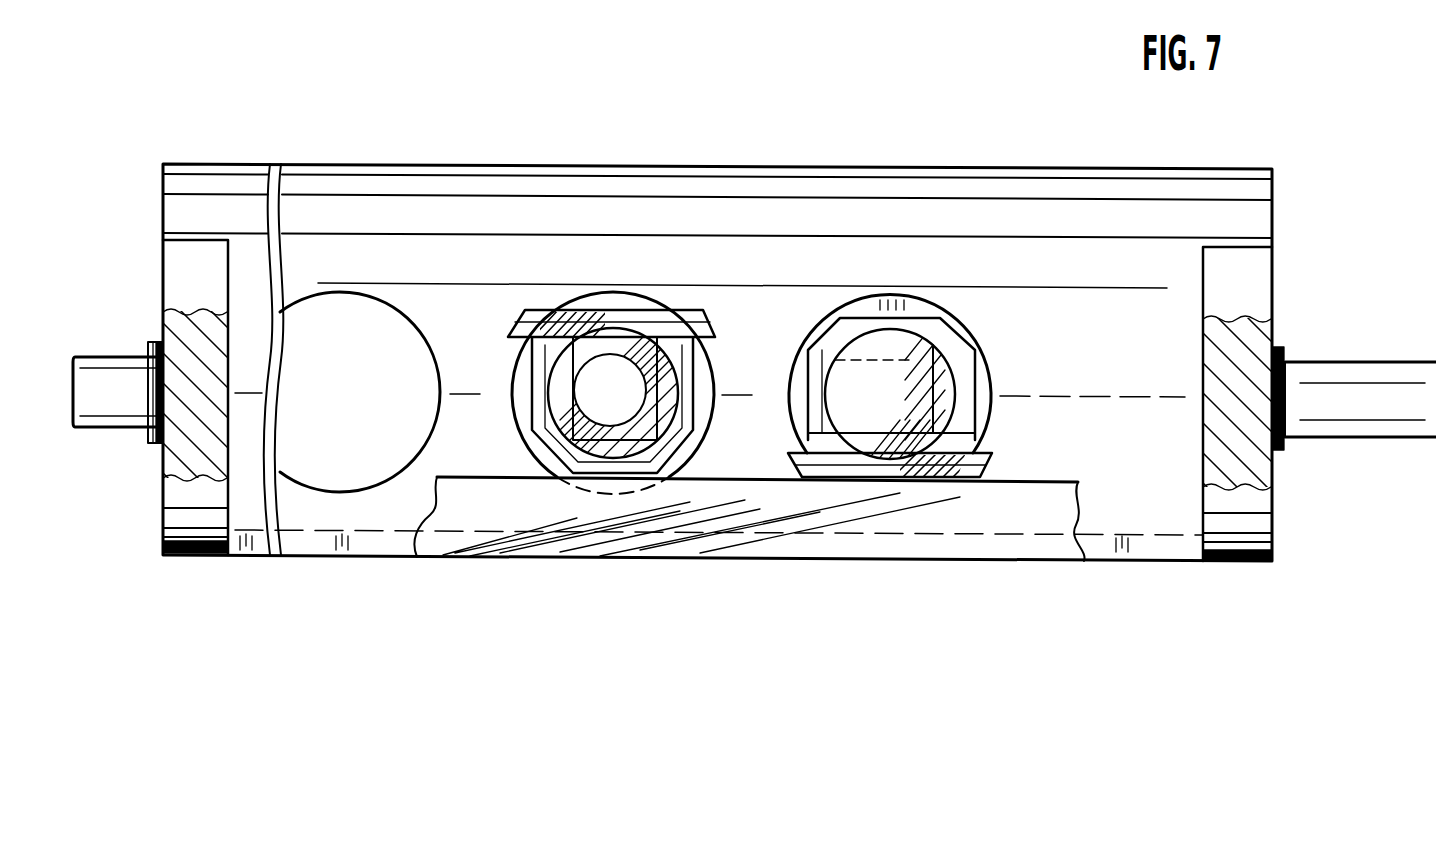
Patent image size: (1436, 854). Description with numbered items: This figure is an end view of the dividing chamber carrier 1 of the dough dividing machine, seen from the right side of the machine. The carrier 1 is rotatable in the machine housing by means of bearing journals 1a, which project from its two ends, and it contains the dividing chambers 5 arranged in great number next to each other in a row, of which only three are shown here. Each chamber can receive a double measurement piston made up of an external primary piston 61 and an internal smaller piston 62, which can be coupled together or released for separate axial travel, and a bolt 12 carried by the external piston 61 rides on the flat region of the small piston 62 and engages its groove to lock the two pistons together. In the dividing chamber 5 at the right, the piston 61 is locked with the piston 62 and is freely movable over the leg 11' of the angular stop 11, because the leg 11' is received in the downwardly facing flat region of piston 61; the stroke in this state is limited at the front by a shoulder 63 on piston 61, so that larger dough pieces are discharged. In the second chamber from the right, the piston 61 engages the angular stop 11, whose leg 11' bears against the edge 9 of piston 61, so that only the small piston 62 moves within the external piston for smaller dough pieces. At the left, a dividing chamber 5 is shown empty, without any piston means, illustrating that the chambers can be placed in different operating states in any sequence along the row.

The dividing chamber carrier 1 is at (1238, 212).
The bearing journals 1a is at (120, 403).
The dividing chambers 5 is at (414, 427).
The edge of piston 61 9 is at (888, 303).
The angular stop 11 is at (749, 542).
The leg of angular stop 11' is at (418, 502).
The bolt 12 is at (530, 344).
The external primary piston 61 is at (930, 325).
The internal smaller piston 62 is at (950, 365).
The shoulder 63 is at (704, 314).